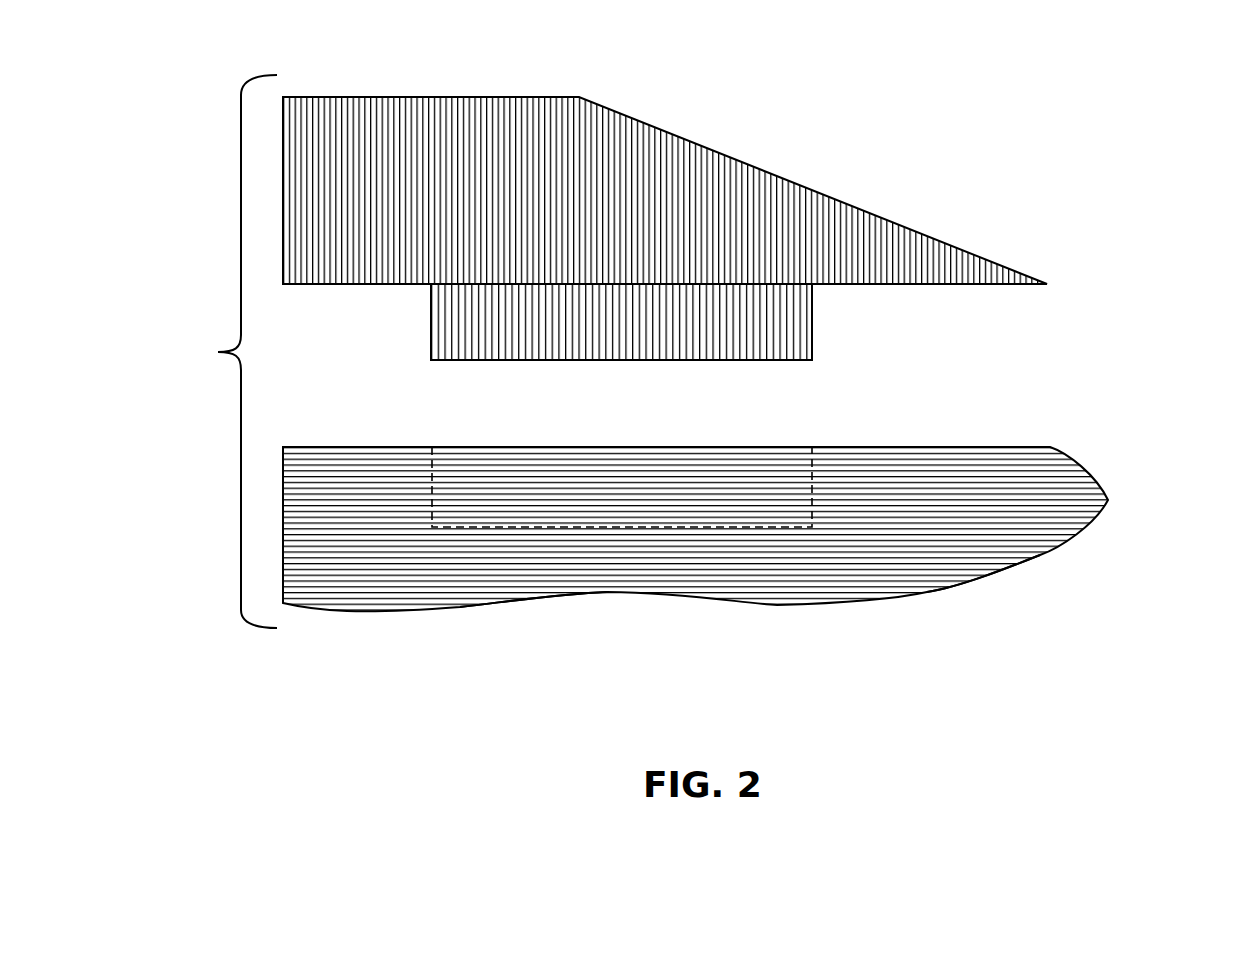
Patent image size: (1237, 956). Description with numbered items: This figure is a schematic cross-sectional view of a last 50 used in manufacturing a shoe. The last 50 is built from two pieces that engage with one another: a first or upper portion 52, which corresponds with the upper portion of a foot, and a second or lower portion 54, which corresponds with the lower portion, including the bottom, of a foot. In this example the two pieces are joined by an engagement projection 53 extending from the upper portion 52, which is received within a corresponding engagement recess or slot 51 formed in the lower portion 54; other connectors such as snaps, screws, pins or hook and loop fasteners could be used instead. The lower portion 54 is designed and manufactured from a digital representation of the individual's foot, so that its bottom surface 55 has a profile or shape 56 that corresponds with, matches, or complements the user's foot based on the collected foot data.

The last 50 is at (217, 352).
The engagement recess or slot 51 is at (812, 478).
The upper portion 52 is at (850, 126).
The engagement projection 53 is at (812, 312).
The lower portion 54 is at (1150, 457).
The bottom surface 55 is at (510, 602).
The profile or shape 56 is at (935, 598).